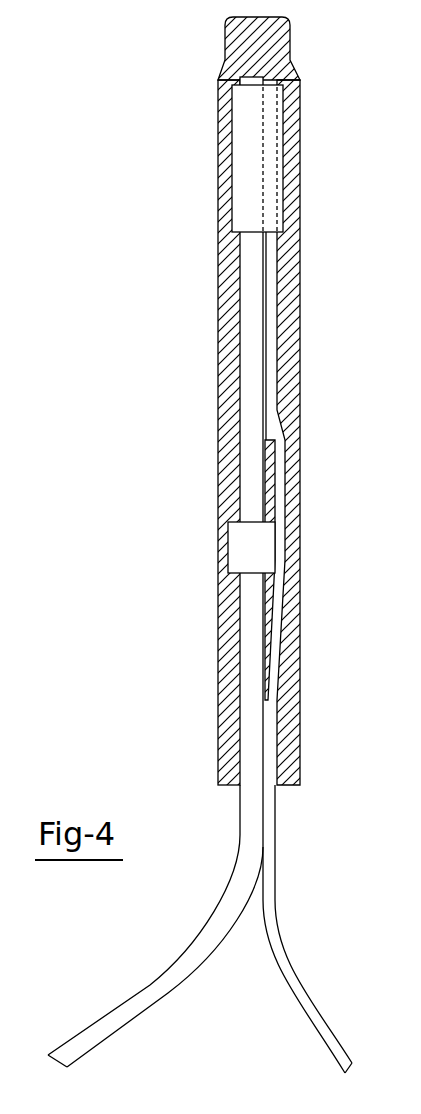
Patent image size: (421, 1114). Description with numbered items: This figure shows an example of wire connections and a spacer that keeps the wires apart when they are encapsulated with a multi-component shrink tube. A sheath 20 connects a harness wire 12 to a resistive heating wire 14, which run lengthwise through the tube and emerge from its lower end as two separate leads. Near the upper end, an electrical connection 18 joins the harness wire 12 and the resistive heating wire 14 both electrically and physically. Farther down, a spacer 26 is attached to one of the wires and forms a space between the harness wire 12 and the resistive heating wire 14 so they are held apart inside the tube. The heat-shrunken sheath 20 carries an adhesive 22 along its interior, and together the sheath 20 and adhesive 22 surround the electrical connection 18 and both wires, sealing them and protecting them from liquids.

The harness wire 12 is at (240, 403).
The resistive heating wire 14 is at (292, 469).
The electrical connection 18 is at (292, 167).
The sheath 20 is at (213, 266).
The adhesive 22 is at (267, 462).
The spacer 26 is at (218, 533).